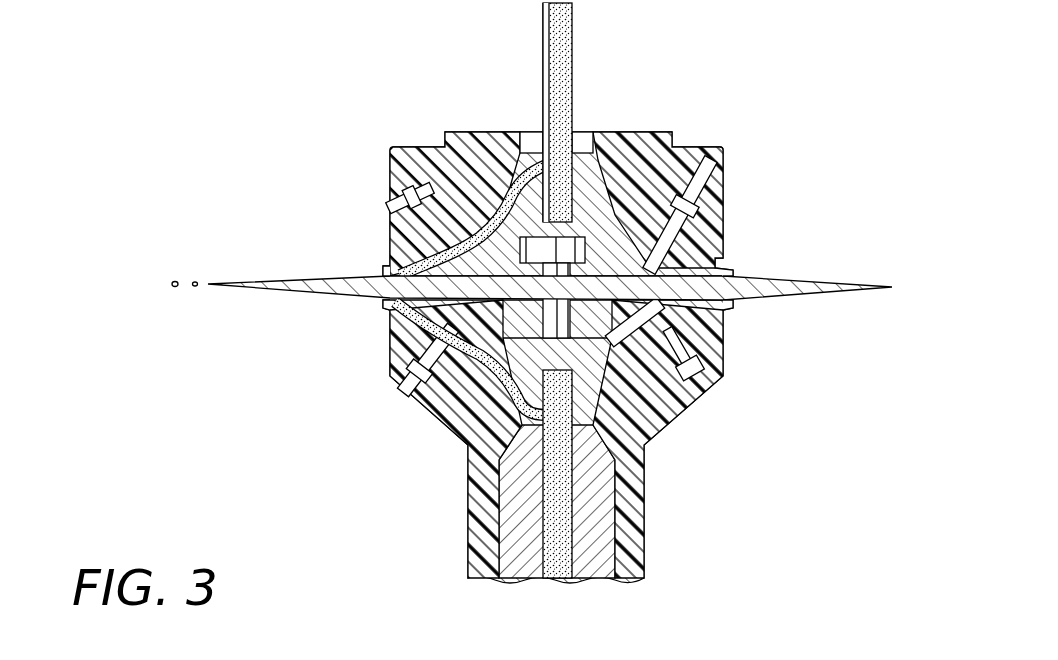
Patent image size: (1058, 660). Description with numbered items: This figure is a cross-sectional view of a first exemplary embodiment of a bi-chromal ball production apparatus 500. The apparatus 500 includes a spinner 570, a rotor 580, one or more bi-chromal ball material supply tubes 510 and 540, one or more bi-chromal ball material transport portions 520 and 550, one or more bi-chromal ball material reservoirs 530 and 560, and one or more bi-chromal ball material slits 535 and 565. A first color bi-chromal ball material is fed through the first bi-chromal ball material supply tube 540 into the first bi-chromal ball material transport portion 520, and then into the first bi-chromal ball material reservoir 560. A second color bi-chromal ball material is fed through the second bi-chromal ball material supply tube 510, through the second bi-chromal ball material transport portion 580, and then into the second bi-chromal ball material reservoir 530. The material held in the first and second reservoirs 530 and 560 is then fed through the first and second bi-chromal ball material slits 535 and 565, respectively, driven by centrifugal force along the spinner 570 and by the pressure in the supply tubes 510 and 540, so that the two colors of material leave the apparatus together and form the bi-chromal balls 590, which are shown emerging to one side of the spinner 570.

The bi-chromal ball production apparatus 500 is at (314, 420).
The second bi-chromal ball material supply tube 510 is at (570, 48).
The first bi-chromal ball material transport portion 520 is at (388, 243).
The second bi-chromal ball material reservoir 530 is at (385, 272).
The first bi-chromal ball material slit 535 is at (733, 273).
The first bi-chromal ball material supply tube 540 is at (563, 493).
The bi-chromal ball material transport portion 550 is at (390, 342).
The first bi-chromal ball material reservoir 560 is at (383, 298).
The second bi-chromal ball material slit 565 is at (733, 305).
The spinner 570 is at (803, 287).
The second bi-chromal ball material transport portion 580 is at (462, 412).
The bi-chromal balls 590 is at (175, 281).